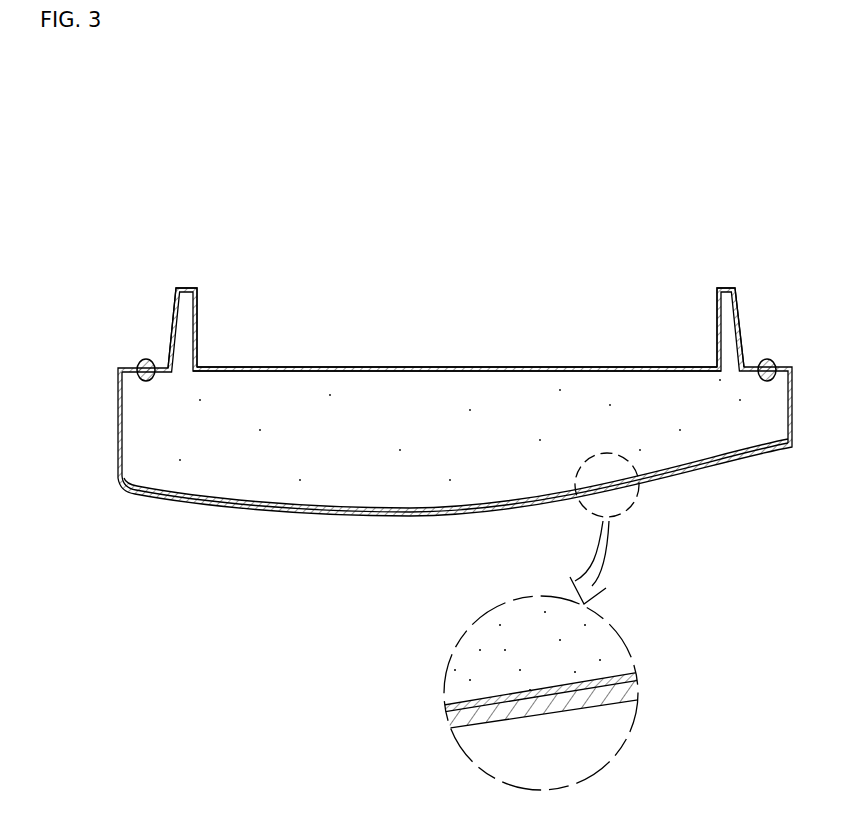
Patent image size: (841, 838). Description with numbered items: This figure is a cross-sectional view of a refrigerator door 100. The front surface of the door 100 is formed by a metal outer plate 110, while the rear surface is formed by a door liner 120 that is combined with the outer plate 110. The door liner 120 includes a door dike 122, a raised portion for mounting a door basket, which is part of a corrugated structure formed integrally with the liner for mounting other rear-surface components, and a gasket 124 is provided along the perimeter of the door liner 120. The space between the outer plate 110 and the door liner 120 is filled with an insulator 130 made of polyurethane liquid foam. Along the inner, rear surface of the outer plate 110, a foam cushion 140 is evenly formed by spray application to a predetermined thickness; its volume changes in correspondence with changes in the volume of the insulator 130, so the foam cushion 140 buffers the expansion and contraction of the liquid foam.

The door 100 is at (614, 243).
The outer plate 110 is at (176, 509).
The door liner 120 is at (360, 366).
The door dike 122 is at (188, 287).
The gasket 124 is at (143, 360).
The insulator 130 is at (292, 490).
The foam cushion 140 is at (409, 514).